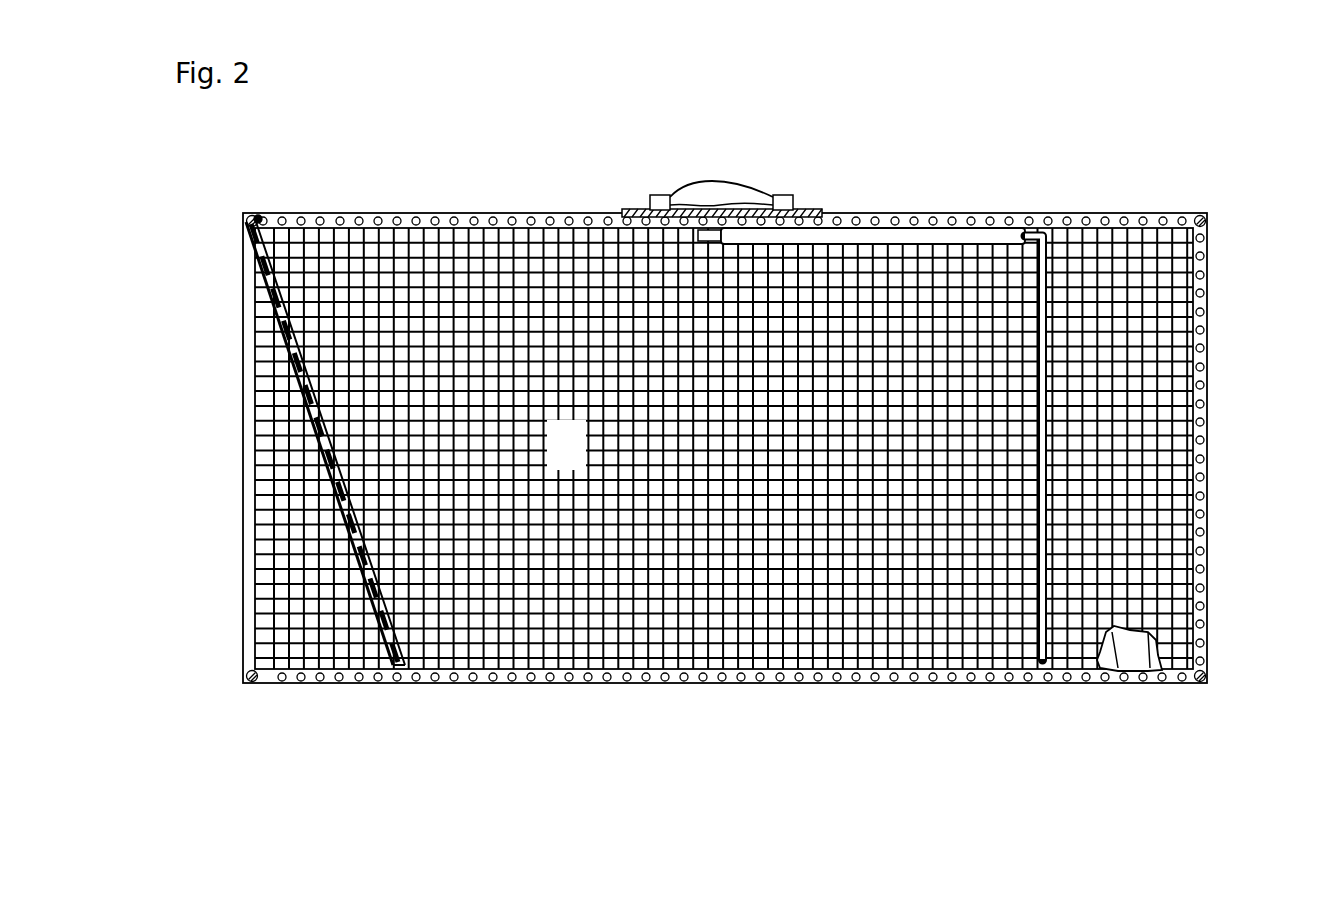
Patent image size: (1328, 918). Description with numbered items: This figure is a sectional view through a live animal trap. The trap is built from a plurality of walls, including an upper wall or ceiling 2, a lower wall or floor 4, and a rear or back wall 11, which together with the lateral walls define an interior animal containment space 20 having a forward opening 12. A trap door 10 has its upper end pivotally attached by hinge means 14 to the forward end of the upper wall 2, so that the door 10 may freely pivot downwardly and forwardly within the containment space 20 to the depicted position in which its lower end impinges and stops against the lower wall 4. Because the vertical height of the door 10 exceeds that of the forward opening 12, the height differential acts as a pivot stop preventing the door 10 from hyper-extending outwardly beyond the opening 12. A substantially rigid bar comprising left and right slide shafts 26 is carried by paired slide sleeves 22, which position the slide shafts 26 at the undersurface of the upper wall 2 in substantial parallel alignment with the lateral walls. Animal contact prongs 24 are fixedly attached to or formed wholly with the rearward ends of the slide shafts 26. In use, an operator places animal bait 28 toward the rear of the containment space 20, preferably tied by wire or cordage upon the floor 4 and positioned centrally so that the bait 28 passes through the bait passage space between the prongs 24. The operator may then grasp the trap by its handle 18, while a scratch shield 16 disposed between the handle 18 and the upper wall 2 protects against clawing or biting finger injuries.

The upper wall or ceiling 2 is at (543, 213).
The lower wall or floor 4 is at (530, 683).
The trap door 10 is at (302, 397).
The rear or back wall 11 is at (1207, 347).
The forward opening 12 is at (278, 527).
The hinge means 14 is at (260, 217).
The scratch shield 16 is at (818, 210).
The handle 18 is at (725, 193).
The interior animal containment space 20 is at (566, 445).
The slide sleeves 22 is at (992, 230).
The animal contact prongs 24 is at (1043, 507).
The slide shafts 26 is at (712, 241).
The animal bait 28 is at (1135, 648).